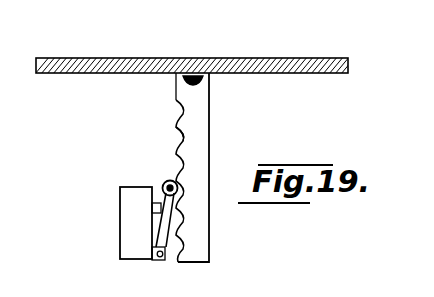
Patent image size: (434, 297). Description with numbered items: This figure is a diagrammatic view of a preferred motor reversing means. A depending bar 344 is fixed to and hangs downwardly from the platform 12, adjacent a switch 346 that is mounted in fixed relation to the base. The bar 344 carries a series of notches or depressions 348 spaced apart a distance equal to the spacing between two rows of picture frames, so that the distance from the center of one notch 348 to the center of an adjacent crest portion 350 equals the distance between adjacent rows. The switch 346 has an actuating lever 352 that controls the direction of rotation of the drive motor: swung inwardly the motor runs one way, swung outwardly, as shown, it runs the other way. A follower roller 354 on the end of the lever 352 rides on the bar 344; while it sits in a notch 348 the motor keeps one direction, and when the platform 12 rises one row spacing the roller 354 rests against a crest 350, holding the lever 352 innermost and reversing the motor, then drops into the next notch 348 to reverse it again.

The platform 12 is at (100, 70).
The depending bar 344 is at (210, 119).
The switch 346 is at (130, 202).
The notches 348 is at (175, 117).
The crest portion 350 is at (178, 144).
The actuating lever 352 is at (160, 235).
The follower roller 354 is at (164, 182).